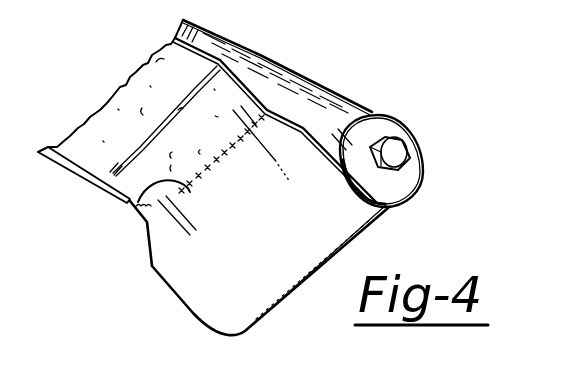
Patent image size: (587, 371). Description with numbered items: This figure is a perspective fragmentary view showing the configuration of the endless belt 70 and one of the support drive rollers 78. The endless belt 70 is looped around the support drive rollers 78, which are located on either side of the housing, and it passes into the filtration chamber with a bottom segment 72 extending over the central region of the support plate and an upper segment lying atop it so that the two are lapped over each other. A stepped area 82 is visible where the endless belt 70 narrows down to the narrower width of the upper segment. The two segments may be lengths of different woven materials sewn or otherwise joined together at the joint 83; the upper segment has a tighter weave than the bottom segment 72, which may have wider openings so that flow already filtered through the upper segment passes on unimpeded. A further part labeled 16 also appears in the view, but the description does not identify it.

The endless belt 70 is at (312, 30).
The bottom segment 72 is at (170, 59).
The mounting band 16 is at (288, 121).
The stepped area 82 is at (313, 83).
The support drive rollers 78 is at (373, 132).
The joint 83 is at (133, 207).